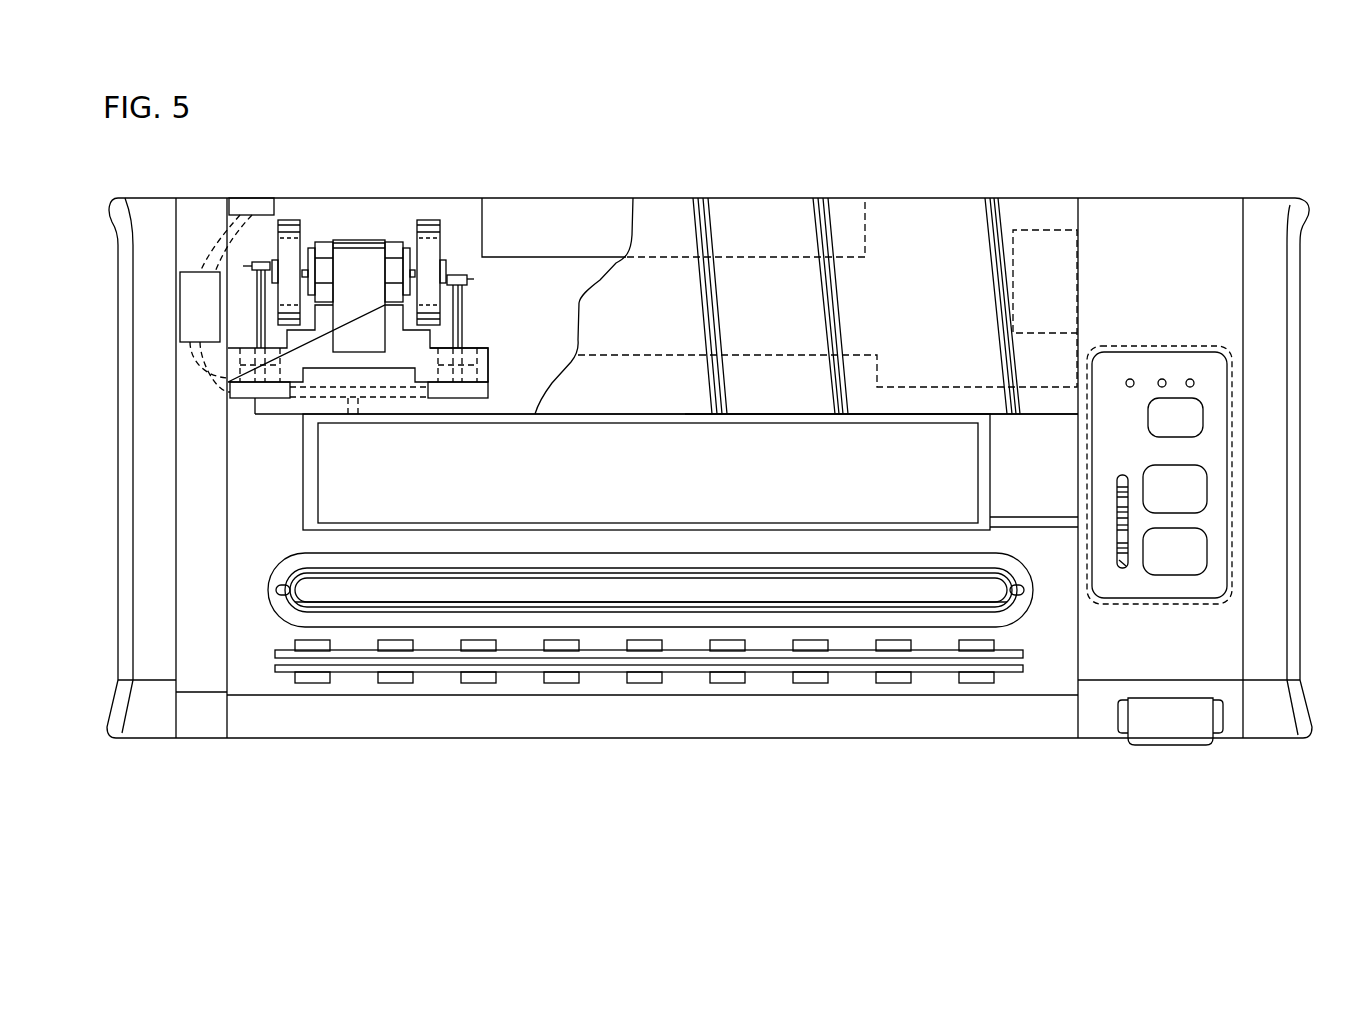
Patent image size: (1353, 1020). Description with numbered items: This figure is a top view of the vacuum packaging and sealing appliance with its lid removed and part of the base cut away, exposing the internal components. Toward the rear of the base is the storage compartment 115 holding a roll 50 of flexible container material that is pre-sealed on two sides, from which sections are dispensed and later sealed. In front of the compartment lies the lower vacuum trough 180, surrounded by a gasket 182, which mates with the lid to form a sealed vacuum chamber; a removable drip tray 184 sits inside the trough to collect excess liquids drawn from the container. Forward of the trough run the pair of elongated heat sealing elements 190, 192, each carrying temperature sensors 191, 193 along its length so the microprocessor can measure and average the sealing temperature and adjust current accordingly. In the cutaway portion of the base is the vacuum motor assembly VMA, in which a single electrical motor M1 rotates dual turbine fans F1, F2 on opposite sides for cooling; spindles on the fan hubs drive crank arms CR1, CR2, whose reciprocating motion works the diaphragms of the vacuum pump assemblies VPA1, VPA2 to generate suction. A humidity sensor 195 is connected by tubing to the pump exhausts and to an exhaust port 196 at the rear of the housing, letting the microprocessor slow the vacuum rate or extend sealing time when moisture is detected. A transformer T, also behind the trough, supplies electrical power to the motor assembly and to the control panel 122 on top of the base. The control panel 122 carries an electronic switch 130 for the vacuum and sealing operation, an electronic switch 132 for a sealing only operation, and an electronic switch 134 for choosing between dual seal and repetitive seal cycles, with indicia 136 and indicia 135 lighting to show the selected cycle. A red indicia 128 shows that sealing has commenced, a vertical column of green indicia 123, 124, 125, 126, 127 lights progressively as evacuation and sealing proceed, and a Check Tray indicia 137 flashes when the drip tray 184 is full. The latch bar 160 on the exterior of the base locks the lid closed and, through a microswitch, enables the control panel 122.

The transformer T is at (1035, 232).
The roll 50 is at (884, 472).
The storage compartment 115 is at (683, 414).
The exhaust port 196 is at (246, 206).
The humidity sensor 195 is at (197, 292).
The vacuum pump assembly VPA2 is at (228, 372).
The vacuum pump assembly VPA1 is at (486, 347).
The crank arm CR2 is at (255, 312).
The crank arm CR1 is at (470, 302).
The turbine fan F2 is at (292, 222).
The turbine fan F1 is at (427, 222).
The electrical motor M1 is at (322, 250).
The vacuum motor assembly VMA is at (353, 240).
The gasket 182 is at (292, 563).
The lower vacuum trough 180 is at (330, 567).
The drip tray 184 is at (598, 592).
The heat sealing element 190 is at (848, 655).
The heat sealing element 192 is at (833, 667).
The temperature sensor 191 is at (545, 644).
The temperature sensor 193 is at (380, 678).
The control panel 122 is at (1165, 352).
The lighted indicia 137 is at (1131, 379).
The indicia 135 is at (1166, 382).
The indicia 136 is at (1194, 384).
The electronic switch 134 is at (1203, 418).
The electronic switch 132 is at (1198, 490).
The electronic switch 130 is at (1195, 555).
The indicia 128 is at (1121, 478).
The indicia 127 is at (1118, 497).
The indicia 126 is at (1118, 513).
The indicia 125 is at (1118, 528).
The indicia 124 is at (1118, 545).
The indicia 123 is at (1122, 565).
The latch bar 160 is at (1160, 730).